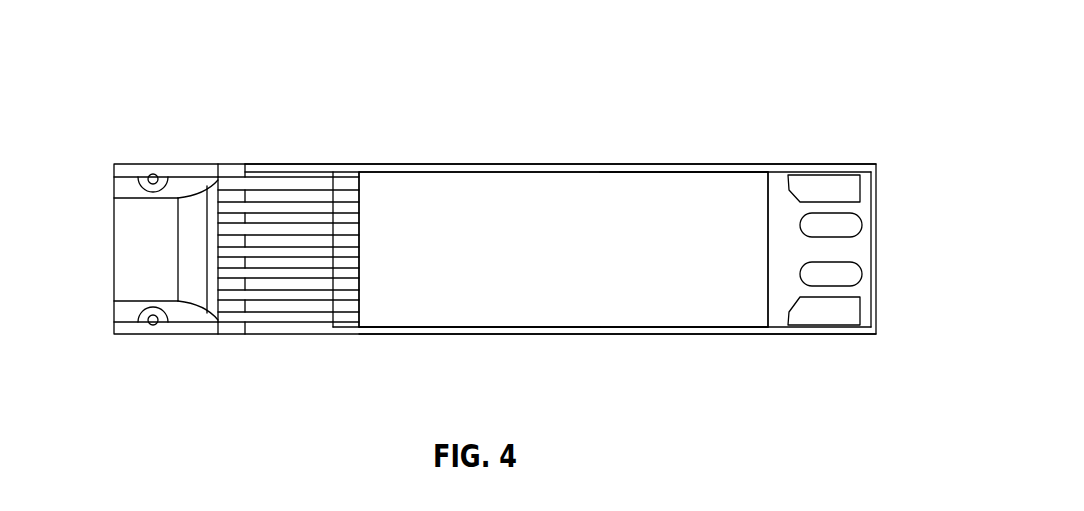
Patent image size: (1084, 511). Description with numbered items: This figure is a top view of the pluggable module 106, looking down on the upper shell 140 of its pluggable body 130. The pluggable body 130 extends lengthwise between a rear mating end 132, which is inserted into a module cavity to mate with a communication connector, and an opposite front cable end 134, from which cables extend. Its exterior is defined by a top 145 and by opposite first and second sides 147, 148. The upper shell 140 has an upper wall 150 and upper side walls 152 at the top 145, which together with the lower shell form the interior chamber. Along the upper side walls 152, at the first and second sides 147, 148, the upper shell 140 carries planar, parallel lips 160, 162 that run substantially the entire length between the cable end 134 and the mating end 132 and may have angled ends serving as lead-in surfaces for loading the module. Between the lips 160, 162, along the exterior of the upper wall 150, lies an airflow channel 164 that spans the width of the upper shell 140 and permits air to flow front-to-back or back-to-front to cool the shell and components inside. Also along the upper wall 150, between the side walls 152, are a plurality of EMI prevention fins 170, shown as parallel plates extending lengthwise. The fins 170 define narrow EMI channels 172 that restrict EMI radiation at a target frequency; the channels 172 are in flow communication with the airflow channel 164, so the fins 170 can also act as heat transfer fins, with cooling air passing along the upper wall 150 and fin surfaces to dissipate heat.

The pluggable module 106 is at (620, 74).
The pluggable body 130 is at (625, 296).
The mating end 132 is at (876, 280).
The cable end 134 is at (114, 322).
The upper shell 140 is at (466, 180).
The top 145 is at (145, 242).
The first side 147 is at (658, 165).
The second side 148 is at (708, 335).
The upper wall 150 is at (535, 205).
The upper side walls 152 is at (588, 165).
The lip 160 is at (713, 166).
The lip 162 is at (473, 328).
The airflow channel 164 is at (732, 226).
The EMI prevention fins 170 is at (280, 304).
The EMI channels 172 is at (302, 318).